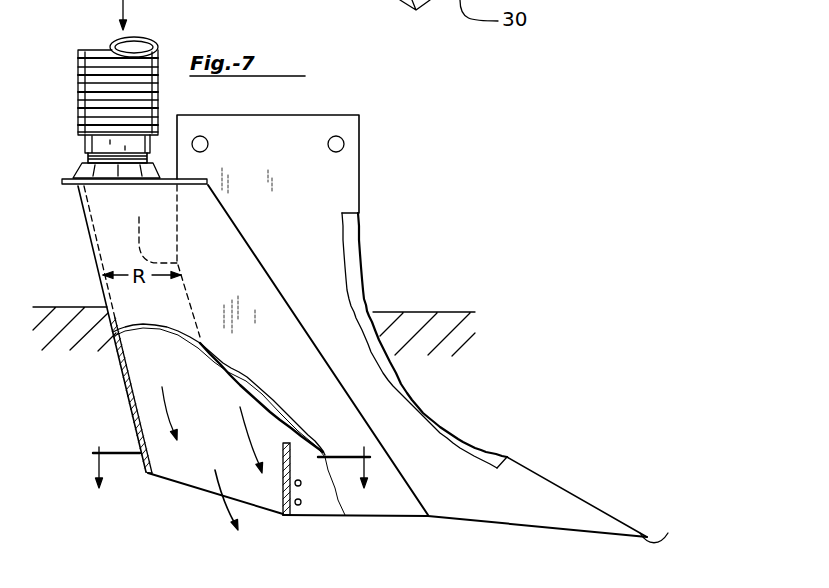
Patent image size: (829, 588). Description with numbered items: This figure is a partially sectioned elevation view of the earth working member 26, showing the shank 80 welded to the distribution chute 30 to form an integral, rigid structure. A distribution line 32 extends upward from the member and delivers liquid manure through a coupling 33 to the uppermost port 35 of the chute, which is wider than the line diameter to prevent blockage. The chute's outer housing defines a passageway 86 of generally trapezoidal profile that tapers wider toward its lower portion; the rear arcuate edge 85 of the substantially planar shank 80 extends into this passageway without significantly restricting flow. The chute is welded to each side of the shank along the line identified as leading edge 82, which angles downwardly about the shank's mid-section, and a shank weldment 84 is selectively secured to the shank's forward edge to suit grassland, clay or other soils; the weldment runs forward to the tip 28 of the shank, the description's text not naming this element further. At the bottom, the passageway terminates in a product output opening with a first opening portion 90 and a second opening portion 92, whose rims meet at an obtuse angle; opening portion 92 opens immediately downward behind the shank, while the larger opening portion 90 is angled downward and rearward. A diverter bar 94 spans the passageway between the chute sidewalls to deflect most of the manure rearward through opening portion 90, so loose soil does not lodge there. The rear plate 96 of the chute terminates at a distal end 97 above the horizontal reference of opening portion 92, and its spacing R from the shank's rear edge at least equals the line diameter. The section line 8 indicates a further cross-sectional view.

The section line 8— 8 is at (231, 480).
The earth working member 26 is at (470, 398).
The share tip 28 is at (668, 533).
The distribution chute 30 is at (232, 265).
The distribution line 32 is at (80, 90).
The coupling 33 is at (82, 147).
The uppermost port 35 is at (95, 192).
The shank 80 is at (497, 502).
The leading edge 82 is at (323, 356).
The shank weldment 84 is at (475, 448).
The rear arcuate edge 85 is at (166, 261).
The passageway 86 is at (210, 400).
The first opening portion 90 is at (174, 484).
The second opening portion 92 is at (395, 512).
The diverter bar 94 is at (284, 486).
The rear plate 96 is at (137, 418).
The distal end 97 is at (148, 474).